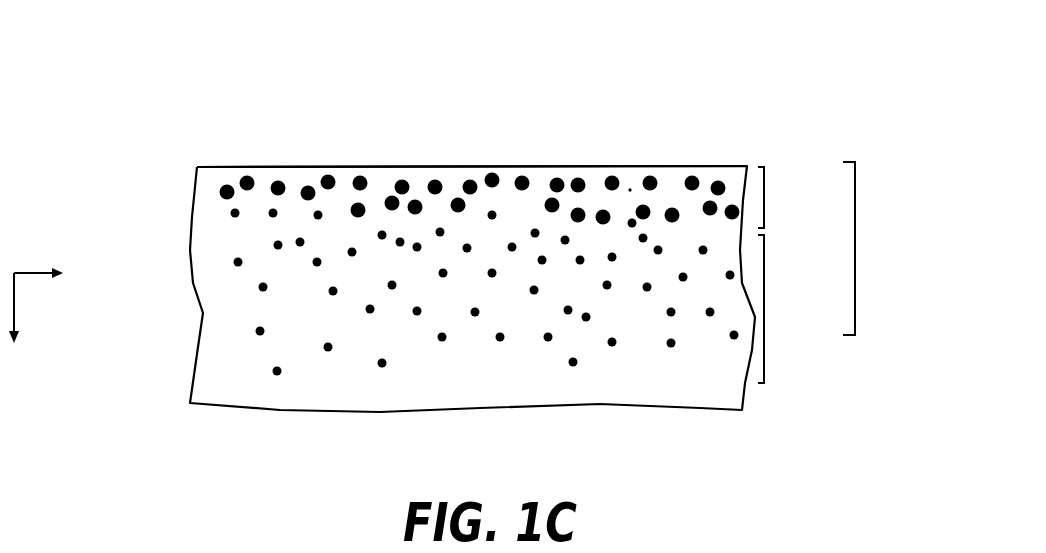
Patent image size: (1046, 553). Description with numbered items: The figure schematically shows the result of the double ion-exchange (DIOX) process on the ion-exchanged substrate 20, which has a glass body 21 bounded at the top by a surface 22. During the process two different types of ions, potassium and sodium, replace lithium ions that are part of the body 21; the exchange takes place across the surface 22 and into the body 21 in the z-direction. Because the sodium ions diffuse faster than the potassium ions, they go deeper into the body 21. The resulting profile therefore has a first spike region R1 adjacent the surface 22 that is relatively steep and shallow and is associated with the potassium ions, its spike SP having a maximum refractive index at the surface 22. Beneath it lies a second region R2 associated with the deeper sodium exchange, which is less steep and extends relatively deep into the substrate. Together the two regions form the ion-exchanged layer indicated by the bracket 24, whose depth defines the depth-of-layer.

The ion-exchanged substrate 20 is at (166, 64).
The body 21 is at (635, 365).
The surface 22 is at (210, 167).
The compressive stress layer 24 is at (855, 250).
The first spike region R1 is at (764, 198).
The second region R2 is at (764, 309).
The spike SP is at (630, 190).